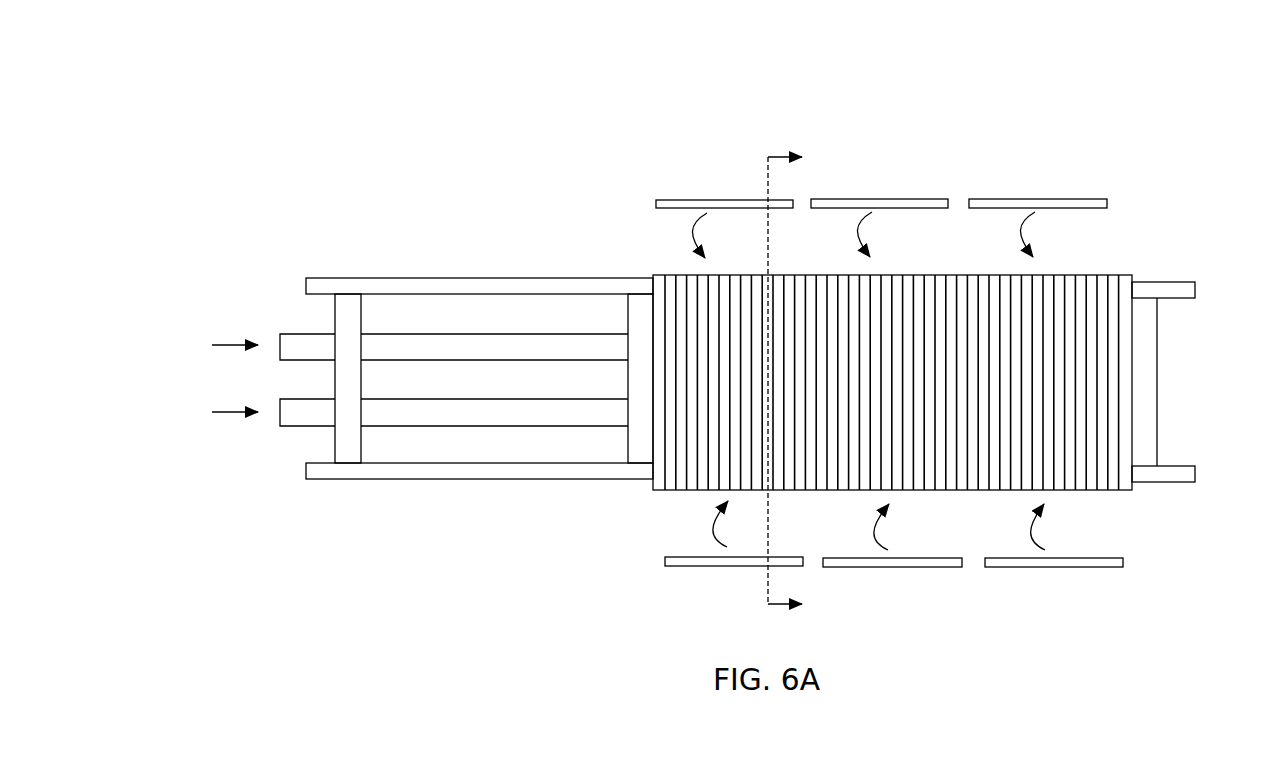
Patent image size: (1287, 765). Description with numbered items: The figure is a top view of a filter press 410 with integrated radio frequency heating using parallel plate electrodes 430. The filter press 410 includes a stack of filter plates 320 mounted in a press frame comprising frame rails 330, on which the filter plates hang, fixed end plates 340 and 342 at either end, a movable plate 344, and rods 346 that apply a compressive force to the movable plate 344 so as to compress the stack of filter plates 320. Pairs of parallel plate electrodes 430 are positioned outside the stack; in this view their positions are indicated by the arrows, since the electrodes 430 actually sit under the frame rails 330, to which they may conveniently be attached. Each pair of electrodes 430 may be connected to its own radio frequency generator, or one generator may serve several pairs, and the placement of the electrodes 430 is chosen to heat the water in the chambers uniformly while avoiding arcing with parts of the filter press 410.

The filter press 410 is at (600, 155).
The stack of filter plates 320 is at (670, 465).
The frame rails 330 is at (495, 283).
The fixed end plate 340 is at (342, 313).
The fixed end plate 342 is at (1143, 413).
The movable plate 344 is at (633, 325).
The rods 346 is at (312, 412).
The parallel plate electrodes 430 is at (870, 202).